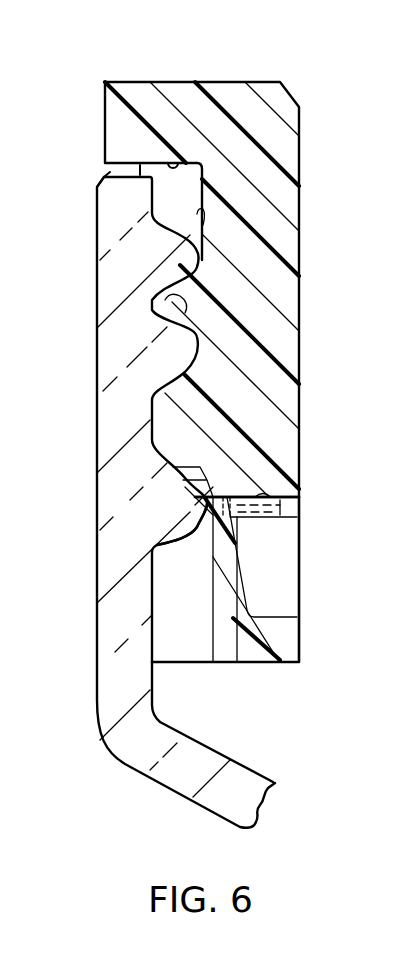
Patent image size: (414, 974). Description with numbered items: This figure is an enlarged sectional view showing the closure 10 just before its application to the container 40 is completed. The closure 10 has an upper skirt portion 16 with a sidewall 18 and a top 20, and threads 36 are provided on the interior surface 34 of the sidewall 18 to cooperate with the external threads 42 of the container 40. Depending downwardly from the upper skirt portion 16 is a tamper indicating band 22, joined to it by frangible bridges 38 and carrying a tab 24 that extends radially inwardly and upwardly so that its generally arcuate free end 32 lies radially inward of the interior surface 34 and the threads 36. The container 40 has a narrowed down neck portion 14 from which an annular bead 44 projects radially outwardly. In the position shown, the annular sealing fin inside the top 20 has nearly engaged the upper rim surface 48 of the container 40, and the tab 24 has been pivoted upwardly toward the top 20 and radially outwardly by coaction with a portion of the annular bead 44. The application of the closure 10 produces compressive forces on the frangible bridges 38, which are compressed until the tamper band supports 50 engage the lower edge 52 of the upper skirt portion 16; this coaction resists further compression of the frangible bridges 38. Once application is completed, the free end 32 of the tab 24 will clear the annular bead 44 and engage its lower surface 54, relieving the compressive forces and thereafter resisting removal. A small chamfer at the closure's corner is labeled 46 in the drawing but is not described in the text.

The closure 10 is at (300, 83).
The narrowed down neck portion 14 is at (152, 680).
The upper skirt portion 16 is at (250, 157).
The sidewall 18 is at (299, 262).
The top 20 is at (105, 82).
The tamper indicating band 22 is at (277, 637).
The tab 24 is at (233, 567).
The free end 32 is at (217, 497).
The interior surface 34 is at (200, 224).
The threads 36 is at (180, 313).
The frangible bridge 38 is at (302, 496).
The container 40 is at (82, 694).
The external threads 42 is at (180, 263).
The annular bead 44 is at (190, 520).
The recess 46 is at (177, 162).
The upper rim surface 48 is at (110, 172).
The tamper band support 50 is at (280, 512).
The lower edge 52 is at (265, 493).
The lower surface 54 is at (180, 542).